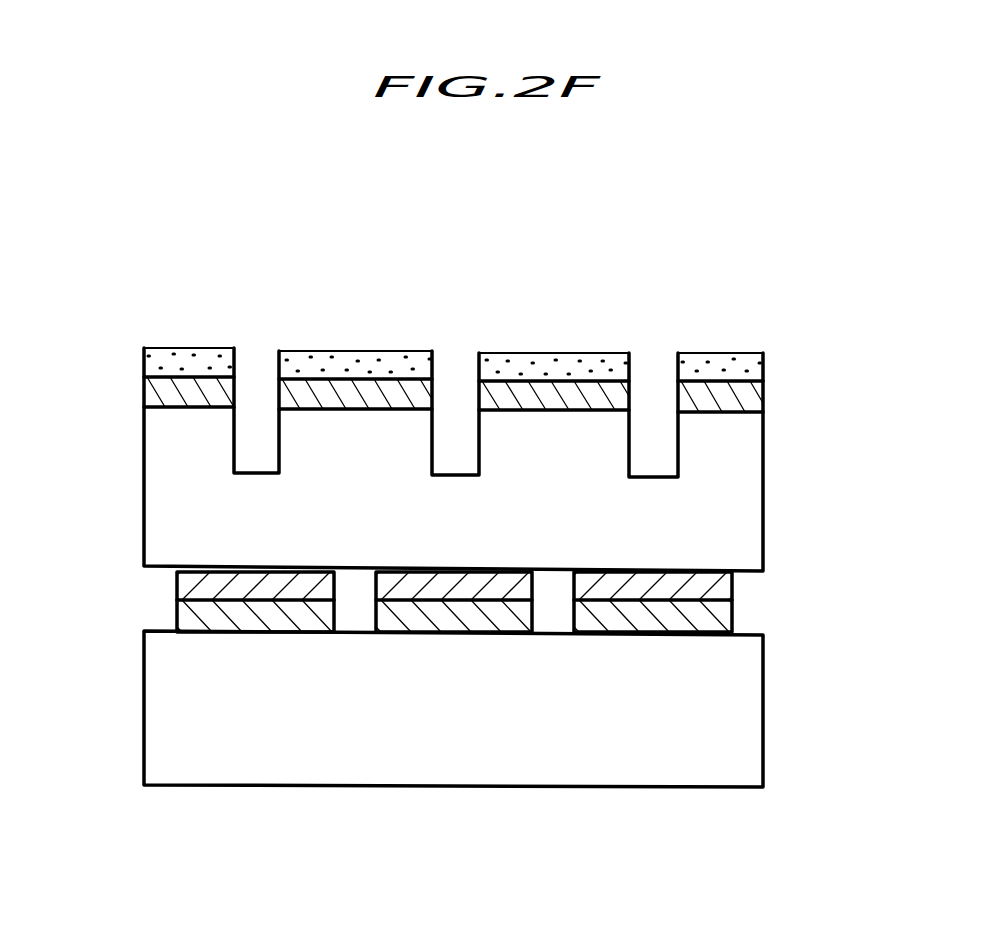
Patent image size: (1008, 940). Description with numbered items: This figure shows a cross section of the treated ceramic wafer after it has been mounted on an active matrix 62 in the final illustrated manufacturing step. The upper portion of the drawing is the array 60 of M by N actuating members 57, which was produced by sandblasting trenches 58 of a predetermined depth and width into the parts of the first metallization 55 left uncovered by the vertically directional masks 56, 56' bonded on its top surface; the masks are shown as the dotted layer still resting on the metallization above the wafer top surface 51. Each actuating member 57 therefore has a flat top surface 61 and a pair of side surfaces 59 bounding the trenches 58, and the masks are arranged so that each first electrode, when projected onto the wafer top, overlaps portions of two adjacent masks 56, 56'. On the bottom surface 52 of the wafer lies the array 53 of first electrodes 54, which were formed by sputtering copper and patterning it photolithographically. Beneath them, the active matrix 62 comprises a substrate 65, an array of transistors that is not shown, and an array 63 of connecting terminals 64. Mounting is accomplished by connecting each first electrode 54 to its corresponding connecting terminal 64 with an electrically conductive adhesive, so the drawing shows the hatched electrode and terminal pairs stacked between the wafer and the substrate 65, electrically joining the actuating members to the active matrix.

The top surface 51 is at (723, 414).
The bottom surface 52 is at (640, 572).
The array of first electrodes 53 is at (783, 638).
The first electrode 54 is at (484, 583).
The first metallization 55 is at (536, 393).
The mask 56 is at (453, 358).
The adjacent mask 56' is at (628, 323).
The actuating member 57 is at (236, 222).
The trench 58 is at (452, 445).
The side surface 59 is at (278, 440).
The array of actuating members 60 is at (117, 353).
The flat top surface 61 is at (322, 350).
The active matrix 62 is at (117, 630).
The array of connecting terminals 63 is at (502, 618).
The connecting terminal 64 is at (480, 623).
The substrate 65 is at (648, 743).